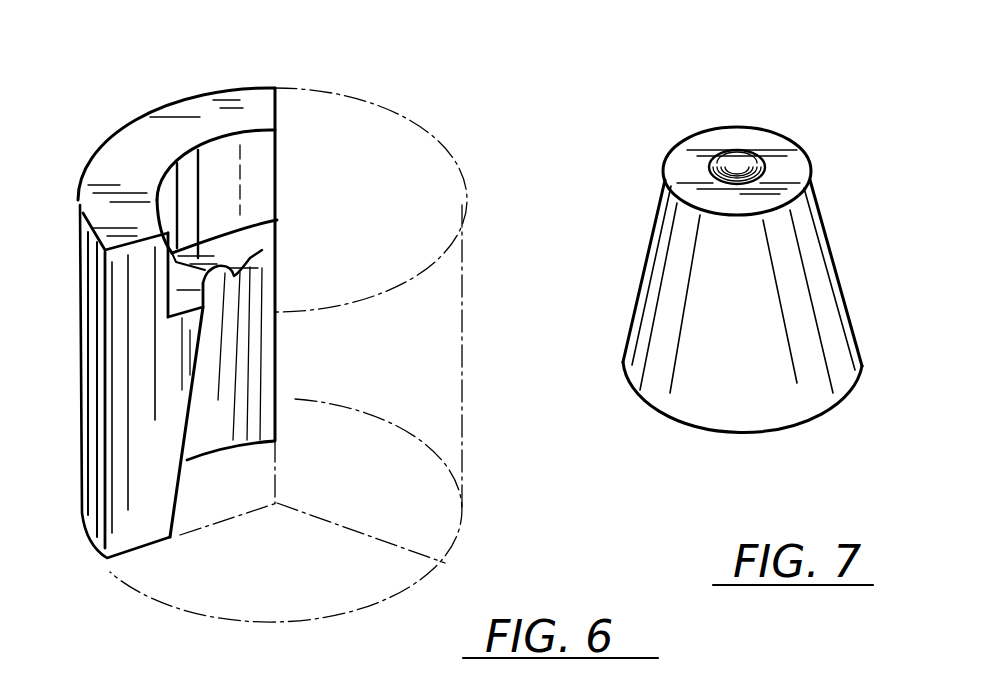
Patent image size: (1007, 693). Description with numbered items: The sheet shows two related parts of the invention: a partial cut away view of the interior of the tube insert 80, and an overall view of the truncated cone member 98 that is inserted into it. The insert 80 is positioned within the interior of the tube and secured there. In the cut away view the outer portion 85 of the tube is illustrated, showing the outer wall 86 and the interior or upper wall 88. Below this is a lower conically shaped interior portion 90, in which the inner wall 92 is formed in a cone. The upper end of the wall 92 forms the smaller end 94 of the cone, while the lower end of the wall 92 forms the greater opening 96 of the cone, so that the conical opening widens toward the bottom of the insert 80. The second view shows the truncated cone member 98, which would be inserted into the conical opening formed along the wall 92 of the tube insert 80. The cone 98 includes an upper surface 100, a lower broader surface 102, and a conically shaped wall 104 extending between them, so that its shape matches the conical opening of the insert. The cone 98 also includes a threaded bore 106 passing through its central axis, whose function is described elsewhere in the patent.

In FIG. 6, the insert 80 is at (177, 88).
In FIG. 6, the outer portion 85 is at (138, 153).
In FIG. 6, the outer wall 86 is at (86, 247).
In FIG. 6, the interior or upper wall 88 is at (222, 165).
In FIG. 6, the lower conically shaped interior portion 90 is at (252, 252).
In FIG. 6, the inner wall 92 is at (252, 401).
In FIG. 6, the smaller end 94 is at (253, 263).
In FIG. 6, the greater opening 96 is at (233, 445).
In FIG. 7, the truncated cone member 98 is at (836, 209).
In FIG. 7, the upper surface 100 is at (692, 145).
In FIG. 7, the lower broader surface 102 is at (667, 427).
In FIG. 7, the conically shaped wall 104 is at (820, 313).
In FIG. 7, the threaded bore 106 is at (747, 152).